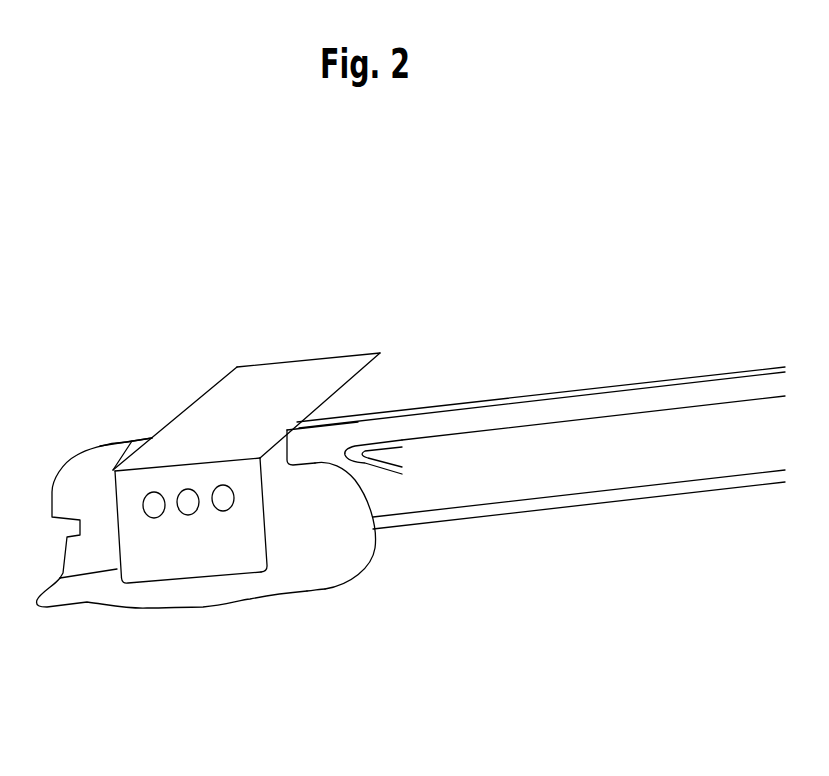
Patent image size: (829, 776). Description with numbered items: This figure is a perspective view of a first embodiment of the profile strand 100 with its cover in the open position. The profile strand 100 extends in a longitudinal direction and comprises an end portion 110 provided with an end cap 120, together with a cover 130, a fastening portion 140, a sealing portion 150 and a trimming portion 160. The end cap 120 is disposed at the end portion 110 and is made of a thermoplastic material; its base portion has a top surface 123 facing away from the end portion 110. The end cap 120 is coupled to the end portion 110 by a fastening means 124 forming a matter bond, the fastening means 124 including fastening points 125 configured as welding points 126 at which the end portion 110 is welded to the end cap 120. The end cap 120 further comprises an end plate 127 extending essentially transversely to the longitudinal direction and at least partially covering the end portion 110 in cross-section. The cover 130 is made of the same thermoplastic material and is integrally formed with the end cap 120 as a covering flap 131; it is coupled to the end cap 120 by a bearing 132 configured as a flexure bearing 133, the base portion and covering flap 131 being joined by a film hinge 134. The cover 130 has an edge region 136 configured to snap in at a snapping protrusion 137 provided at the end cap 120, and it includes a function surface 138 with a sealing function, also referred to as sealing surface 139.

The profile strand 100 is at (478, 293).
The end portion 110 is at (152, 405).
The end cap 120 is at (180, 616).
The top surface 123 is at (253, 531).
The fastening means 124 is at (147, 497).
The fastening points 125 is at (218, 513).
The welding points 126 is at (228, 505).
The end plate 127 is at (75, 493).
The cover 130 is at (243, 363).
The covering flap 131 is at (283, 375).
The bearing 132 is at (190, 466).
The flexure bearing 133 is at (236, 457).
The film hinge 134 is at (153, 467).
The edge region 136 is at (350, 353).
The snapping protrusion 137 is at (248, 573).
The function surface 138 is at (310, 492).
The sealing surface 139 is at (332, 518).
The fastening portion 140 is at (580, 400).
The sealing portion 150 is at (437, 511).
The trimming portion 160 is at (707, 375).